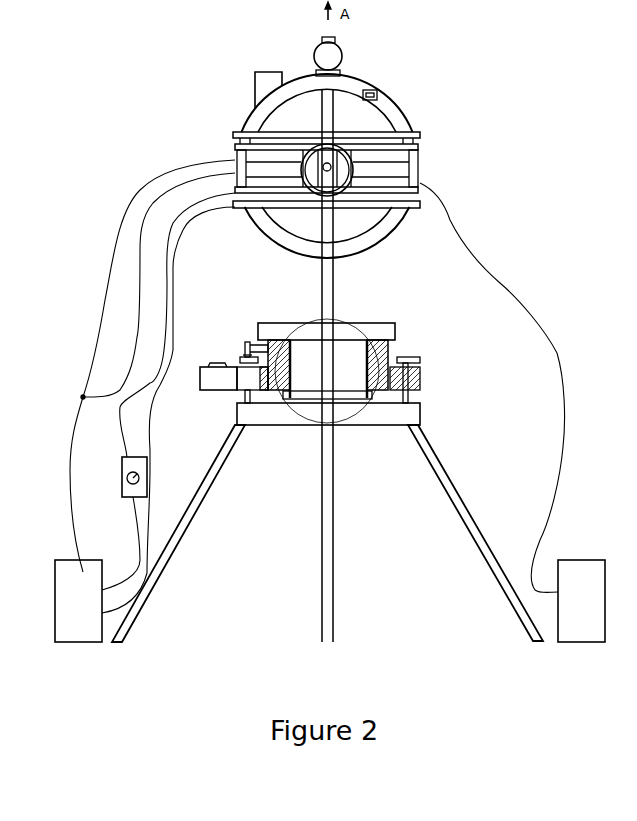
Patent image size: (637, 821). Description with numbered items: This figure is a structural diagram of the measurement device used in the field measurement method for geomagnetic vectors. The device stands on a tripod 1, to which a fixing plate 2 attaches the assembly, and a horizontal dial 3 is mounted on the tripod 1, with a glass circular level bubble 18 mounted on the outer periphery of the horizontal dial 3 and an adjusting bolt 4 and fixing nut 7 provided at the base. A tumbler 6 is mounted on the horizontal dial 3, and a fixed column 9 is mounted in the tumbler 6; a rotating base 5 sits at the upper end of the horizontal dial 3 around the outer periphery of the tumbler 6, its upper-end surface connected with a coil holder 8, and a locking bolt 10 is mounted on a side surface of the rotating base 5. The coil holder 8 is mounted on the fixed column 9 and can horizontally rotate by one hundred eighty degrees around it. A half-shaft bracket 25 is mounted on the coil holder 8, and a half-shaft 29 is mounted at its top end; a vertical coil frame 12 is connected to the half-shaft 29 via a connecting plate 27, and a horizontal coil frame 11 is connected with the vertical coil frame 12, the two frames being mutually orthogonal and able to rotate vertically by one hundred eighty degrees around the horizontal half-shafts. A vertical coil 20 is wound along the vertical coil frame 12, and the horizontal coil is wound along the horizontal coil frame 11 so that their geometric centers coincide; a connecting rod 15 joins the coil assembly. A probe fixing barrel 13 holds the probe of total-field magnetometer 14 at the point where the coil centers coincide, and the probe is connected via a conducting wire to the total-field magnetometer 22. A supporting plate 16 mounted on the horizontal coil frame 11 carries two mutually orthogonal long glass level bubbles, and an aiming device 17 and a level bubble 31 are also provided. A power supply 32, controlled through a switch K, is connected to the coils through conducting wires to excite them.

The tripod 1 is at (372, 330).
The fixing plate 2 is at (420, 413).
The horizontal dial 3 is at (420, 383).
The adjusting bolt 4 is at (243, 362).
The rotating base 5 is at (395, 358).
The tumbler 6 is at (245, 345).
The fixing nut 7 is at (250, 397).
The coil holder 8 is at (388, 344).
The fixed column 9 is at (287, 342).
The locking bolt 10 is at (243, 355).
The horizontal coil frame 11 is at (383, 103).
The vertical coil frame 12 is at (420, 135).
The probe fixing barrel 13 is at (300, 178).
The probe of total-field magnetometer 14 is at (305, 160).
The connecting rod 15 is at (422, 165).
The supporting plate 16 is at (262, 83).
The aiming device 17 is at (334, 54).
The glass circular level bubble 18 is at (205, 378).
The vertical coil 20 is at (422, 147).
The total-field magnetometer 22 is at (573, 572).
The half-shaft bracket 25 is at (330, 285).
The connecting plate 27 is at (323, 164).
The half-shaft 29 is at (240, 128).
The level bubble 31 is at (374, 93).
The power supply 32 is at (83, 570).
The switch K is at (122, 482).